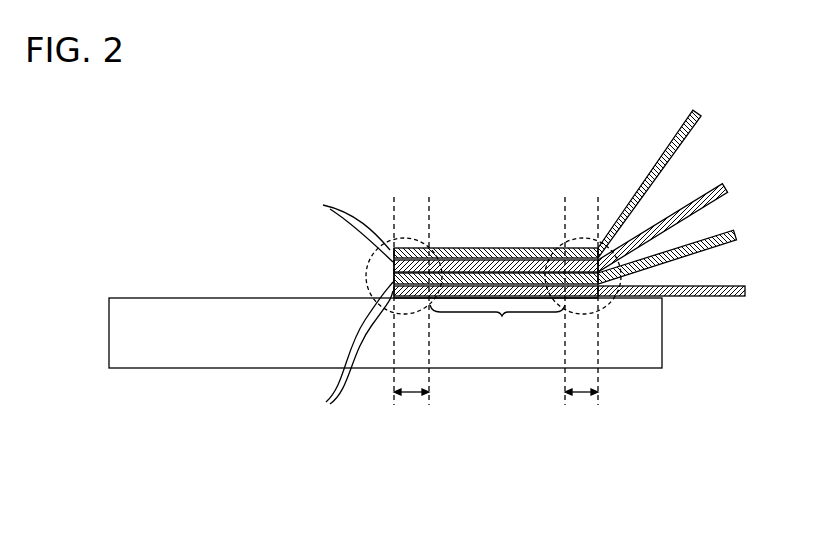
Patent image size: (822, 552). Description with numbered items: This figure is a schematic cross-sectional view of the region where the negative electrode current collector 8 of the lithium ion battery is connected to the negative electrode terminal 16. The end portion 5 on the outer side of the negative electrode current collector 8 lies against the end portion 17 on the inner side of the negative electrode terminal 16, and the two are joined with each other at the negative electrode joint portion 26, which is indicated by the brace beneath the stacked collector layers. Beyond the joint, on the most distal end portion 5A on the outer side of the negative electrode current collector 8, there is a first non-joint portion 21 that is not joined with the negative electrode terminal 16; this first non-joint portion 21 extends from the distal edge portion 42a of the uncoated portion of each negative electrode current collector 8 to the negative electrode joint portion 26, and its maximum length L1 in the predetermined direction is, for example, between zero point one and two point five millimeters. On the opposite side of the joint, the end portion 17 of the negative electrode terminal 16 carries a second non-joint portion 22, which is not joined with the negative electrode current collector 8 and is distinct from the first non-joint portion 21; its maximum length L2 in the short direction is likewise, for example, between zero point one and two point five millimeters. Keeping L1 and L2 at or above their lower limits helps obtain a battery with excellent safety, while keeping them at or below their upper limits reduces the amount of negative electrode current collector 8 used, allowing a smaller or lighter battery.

The end portion on the outer side of the negative electrode current collector 5 is at (495, 247).
The most distal end portion on the outer side of the negative electrode current coll 5A is at (412, 247).
The negative electrode current collector 8 is at (675, 145).
The negative electrode terminal 16 is at (217, 342).
The end portion on the inner side of the negative electrode terminal 17 is at (502, 350).
The first non-joint portion 21 is at (392, 268).
The second non-joint portion 22 is at (580, 243).
The negative electrode joint portion 26 is at (502, 315).
The distal edge portion of the uncoated portion 42a is at (337, 302).
The maximum length of the first non-joint portion L1 is at (411, 317).
The maximum length of the second non-joint portion L2 is at (581, 319).